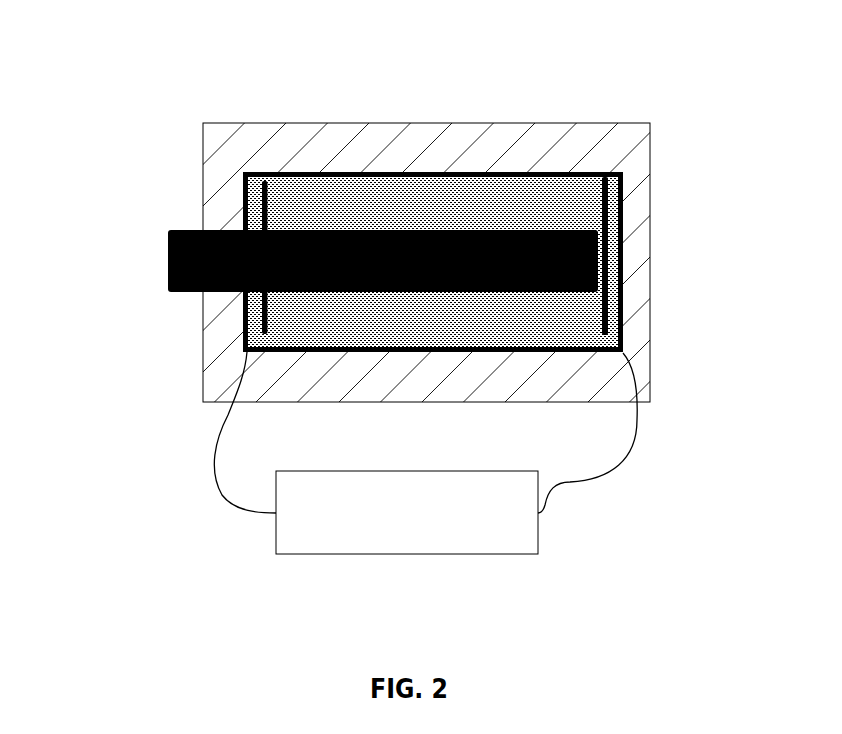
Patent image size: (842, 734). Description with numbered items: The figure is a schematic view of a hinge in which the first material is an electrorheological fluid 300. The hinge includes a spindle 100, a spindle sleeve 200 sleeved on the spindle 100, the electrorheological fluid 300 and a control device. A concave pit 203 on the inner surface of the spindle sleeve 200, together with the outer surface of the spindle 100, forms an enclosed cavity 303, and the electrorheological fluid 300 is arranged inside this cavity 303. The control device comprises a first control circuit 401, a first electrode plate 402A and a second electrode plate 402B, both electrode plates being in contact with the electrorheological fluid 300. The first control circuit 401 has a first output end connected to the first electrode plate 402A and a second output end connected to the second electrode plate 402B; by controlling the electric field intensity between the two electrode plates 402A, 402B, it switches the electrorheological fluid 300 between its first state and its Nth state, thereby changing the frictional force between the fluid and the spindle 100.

The spindle 100 is at (175, 230).
The spindle sleeve 200 is at (243, 123).
The concave pit 203 is at (340, 172).
The electrorheological fluid 300 is at (503, 195).
The cavity 303 is at (425, 195).
The first control circuit 401 is at (399, 556).
The first electrode plate 402A is at (243, 343).
The second electrode plate 402B is at (625, 325).